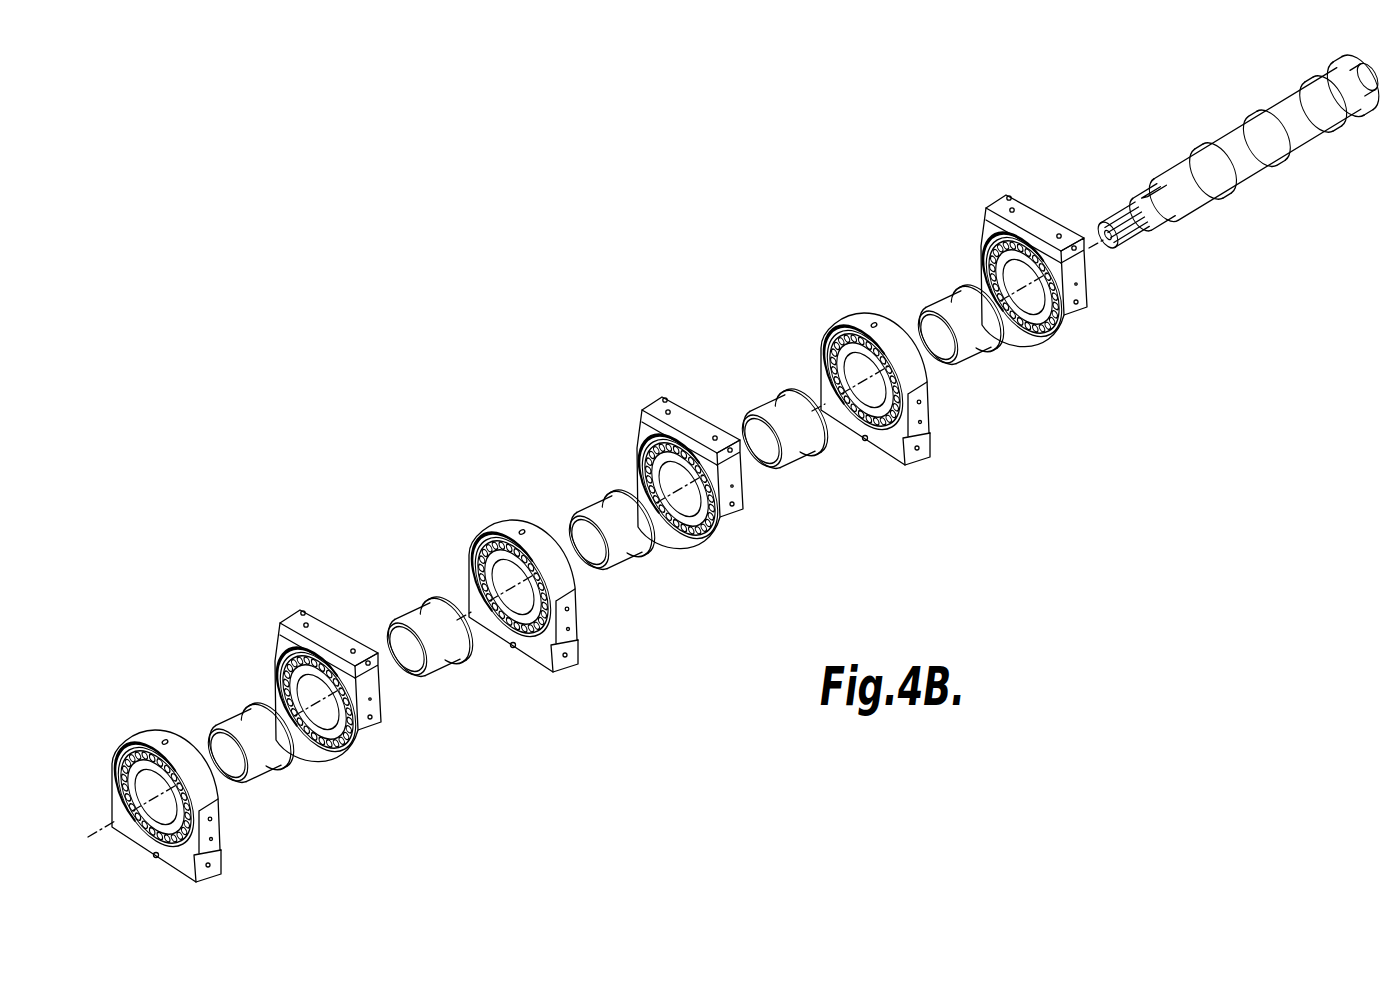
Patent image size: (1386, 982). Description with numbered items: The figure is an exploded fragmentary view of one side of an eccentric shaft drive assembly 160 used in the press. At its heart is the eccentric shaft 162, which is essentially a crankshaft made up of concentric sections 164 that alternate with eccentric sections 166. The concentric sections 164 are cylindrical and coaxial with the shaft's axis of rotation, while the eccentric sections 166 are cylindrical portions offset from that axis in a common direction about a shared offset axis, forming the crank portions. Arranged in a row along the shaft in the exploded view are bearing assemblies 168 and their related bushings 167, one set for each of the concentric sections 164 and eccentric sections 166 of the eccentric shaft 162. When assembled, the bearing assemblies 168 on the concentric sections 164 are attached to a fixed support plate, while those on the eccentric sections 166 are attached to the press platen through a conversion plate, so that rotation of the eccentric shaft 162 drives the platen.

The eccentric shaft drive assembly 160 is at (889, 182).
The eccentric shaft 162 is at (1232, 145).
The concentric sections 164 is at (1207, 207).
The eccentric sections 166 is at (1212, 150).
The bushings 167 is at (940, 308).
The bearing assemblies 168 is at (992, 204).